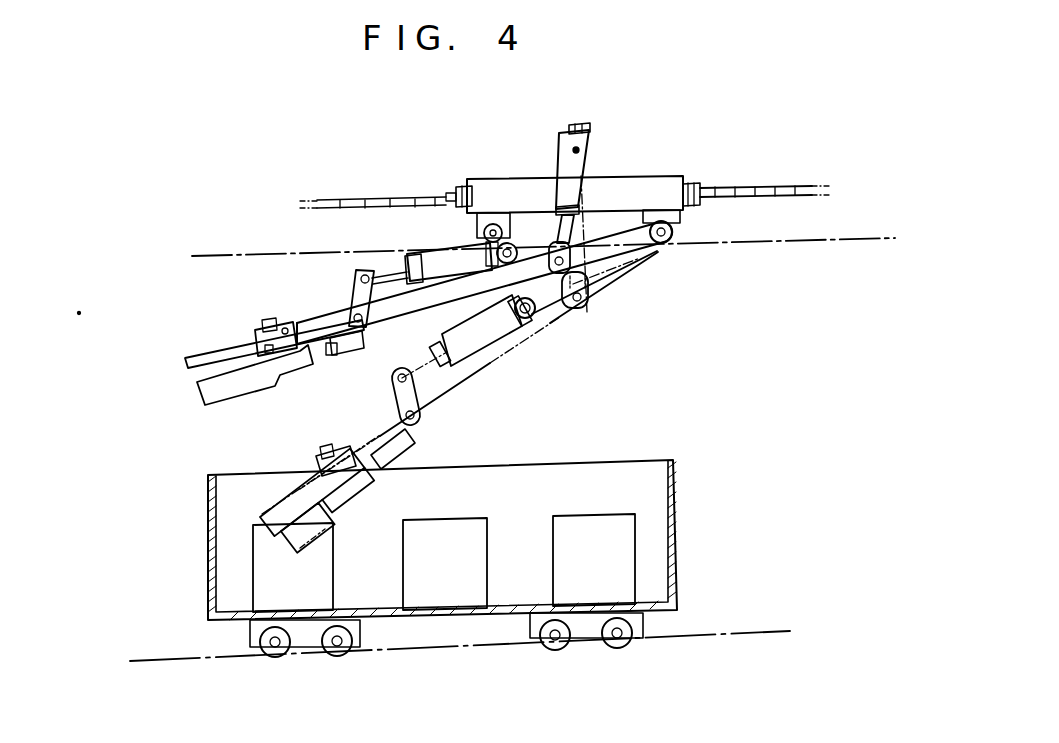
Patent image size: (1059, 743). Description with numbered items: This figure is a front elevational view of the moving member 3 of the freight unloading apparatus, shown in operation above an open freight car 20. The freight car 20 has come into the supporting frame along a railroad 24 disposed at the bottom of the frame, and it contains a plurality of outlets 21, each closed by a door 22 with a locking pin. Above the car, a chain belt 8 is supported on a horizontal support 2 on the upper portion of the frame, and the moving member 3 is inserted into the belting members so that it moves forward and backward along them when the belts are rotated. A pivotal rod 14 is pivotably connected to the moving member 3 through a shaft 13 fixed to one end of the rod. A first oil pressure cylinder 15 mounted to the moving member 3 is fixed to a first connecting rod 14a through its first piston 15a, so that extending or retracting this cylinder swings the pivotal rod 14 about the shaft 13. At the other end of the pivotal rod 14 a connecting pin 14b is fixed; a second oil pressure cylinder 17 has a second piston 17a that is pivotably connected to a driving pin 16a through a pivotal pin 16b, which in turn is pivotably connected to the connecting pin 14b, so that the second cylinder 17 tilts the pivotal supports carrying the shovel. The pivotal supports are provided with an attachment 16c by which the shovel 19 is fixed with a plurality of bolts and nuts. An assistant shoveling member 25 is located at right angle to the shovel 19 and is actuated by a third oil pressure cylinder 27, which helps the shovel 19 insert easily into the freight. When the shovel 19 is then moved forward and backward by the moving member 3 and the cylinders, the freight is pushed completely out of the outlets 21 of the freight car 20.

The horizontal support 2 is at (768, 243).
The moving member 3 is at (523, 179).
The chain belt 8 is at (765, 188).
The shaft 13 is at (670, 243).
The pivotal rod 14 is at (593, 232).
The first connecting rod 14a is at (553, 277).
The connecting pin 14b is at (278, 318).
The first oil pressure cylinder 15 is at (590, 165).
The first piston 15a is at (605, 284).
The driving pin 16a is at (360, 313).
The pivotal pin 16b is at (365, 275).
The attachment 16c is at (278, 323).
The second oil pressure cylinder 17 is at (440, 263).
The second piston 17a is at (400, 270).
The shovel 19 is at (200, 350).
The open freight car 20 is at (638, 473).
The outlet 21 is at (637, 543).
The door 22 is at (613, 572).
The railroad 24 is at (740, 633).
The assistant shoveling member 25 is at (203, 393).
The third oil pressure cylinder 27 is at (343, 357).